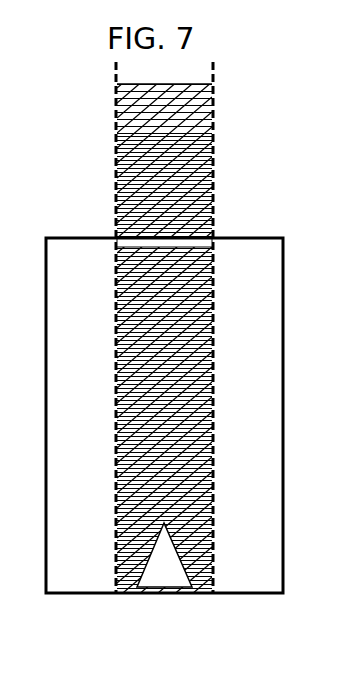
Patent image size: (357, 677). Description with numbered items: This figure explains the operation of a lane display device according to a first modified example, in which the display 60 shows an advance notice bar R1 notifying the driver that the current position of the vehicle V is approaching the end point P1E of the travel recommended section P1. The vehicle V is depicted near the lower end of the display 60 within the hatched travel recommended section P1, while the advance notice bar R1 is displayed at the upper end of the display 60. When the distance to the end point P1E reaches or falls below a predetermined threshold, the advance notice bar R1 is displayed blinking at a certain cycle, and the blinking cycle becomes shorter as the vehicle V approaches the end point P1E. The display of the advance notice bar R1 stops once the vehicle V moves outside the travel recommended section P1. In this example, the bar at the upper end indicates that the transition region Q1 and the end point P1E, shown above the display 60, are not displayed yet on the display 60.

The end point P1E is at (114, 84).
The transition region Q1 is at (216, 84).
The display 60 is at (250, 238).
The advance notice bar R1 is at (192, 243).
The travel recommended section P1 is at (110, 84).
The vehicle V is at (166, 574).